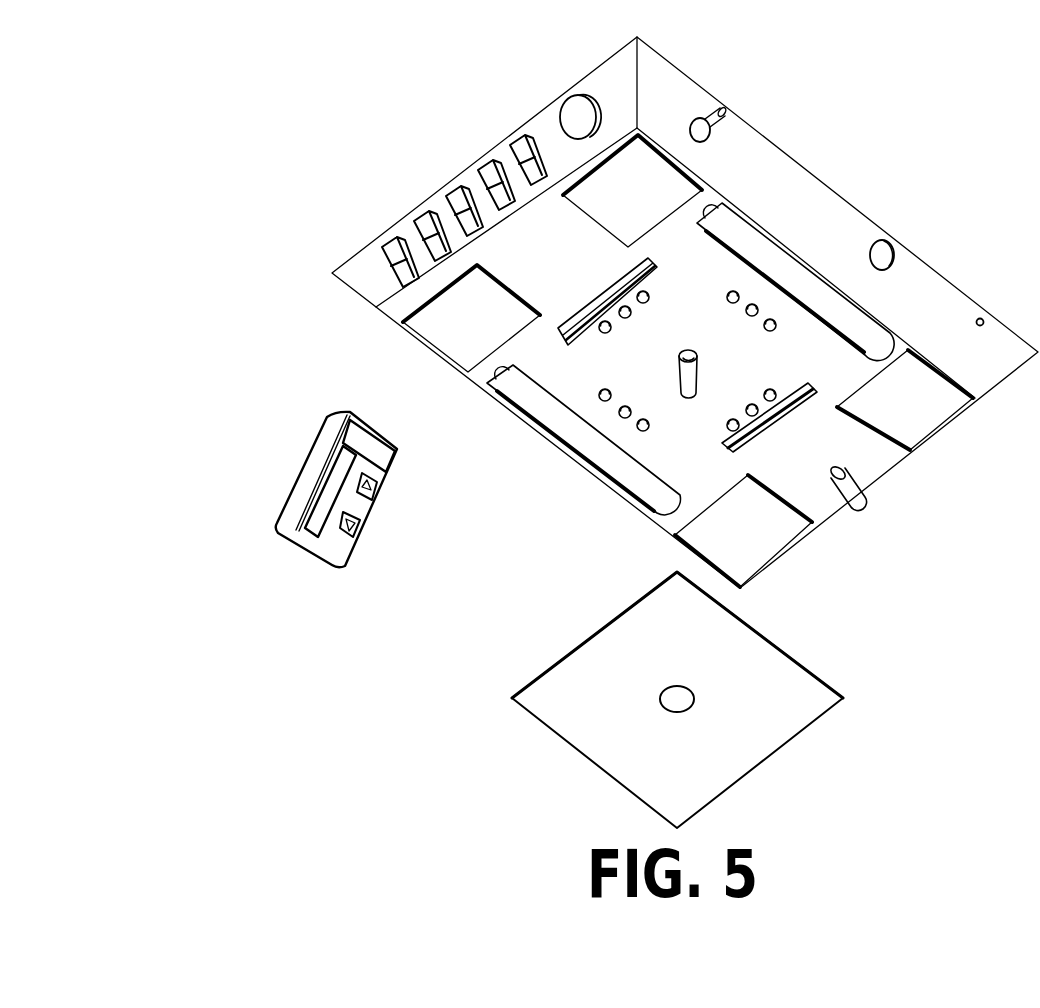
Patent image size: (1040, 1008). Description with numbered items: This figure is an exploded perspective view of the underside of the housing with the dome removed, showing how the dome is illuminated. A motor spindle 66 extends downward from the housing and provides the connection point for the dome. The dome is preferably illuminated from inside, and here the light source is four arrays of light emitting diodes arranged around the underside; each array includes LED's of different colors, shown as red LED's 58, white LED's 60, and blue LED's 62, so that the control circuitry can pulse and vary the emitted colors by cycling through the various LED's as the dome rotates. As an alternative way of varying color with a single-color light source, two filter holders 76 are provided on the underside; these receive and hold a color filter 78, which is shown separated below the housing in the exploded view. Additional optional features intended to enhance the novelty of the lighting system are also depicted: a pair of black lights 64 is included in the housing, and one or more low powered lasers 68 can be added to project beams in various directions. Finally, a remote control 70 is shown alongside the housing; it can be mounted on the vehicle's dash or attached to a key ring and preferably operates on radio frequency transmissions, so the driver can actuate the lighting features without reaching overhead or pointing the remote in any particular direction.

The red LED's 58 is at (735, 292).
The white LED's 60 is at (757, 305).
The blue LED's 62 is at (775, 320).
The black lights 64 is at (590, 443).
The motor spindle 66 is at (680, 388).
The low powered lasers 68 is at (860, 502).
The remote control 70 is at (337, 538).
The filter holders 76 is at (565, 338).
The color filter 78 is at (572, 695).